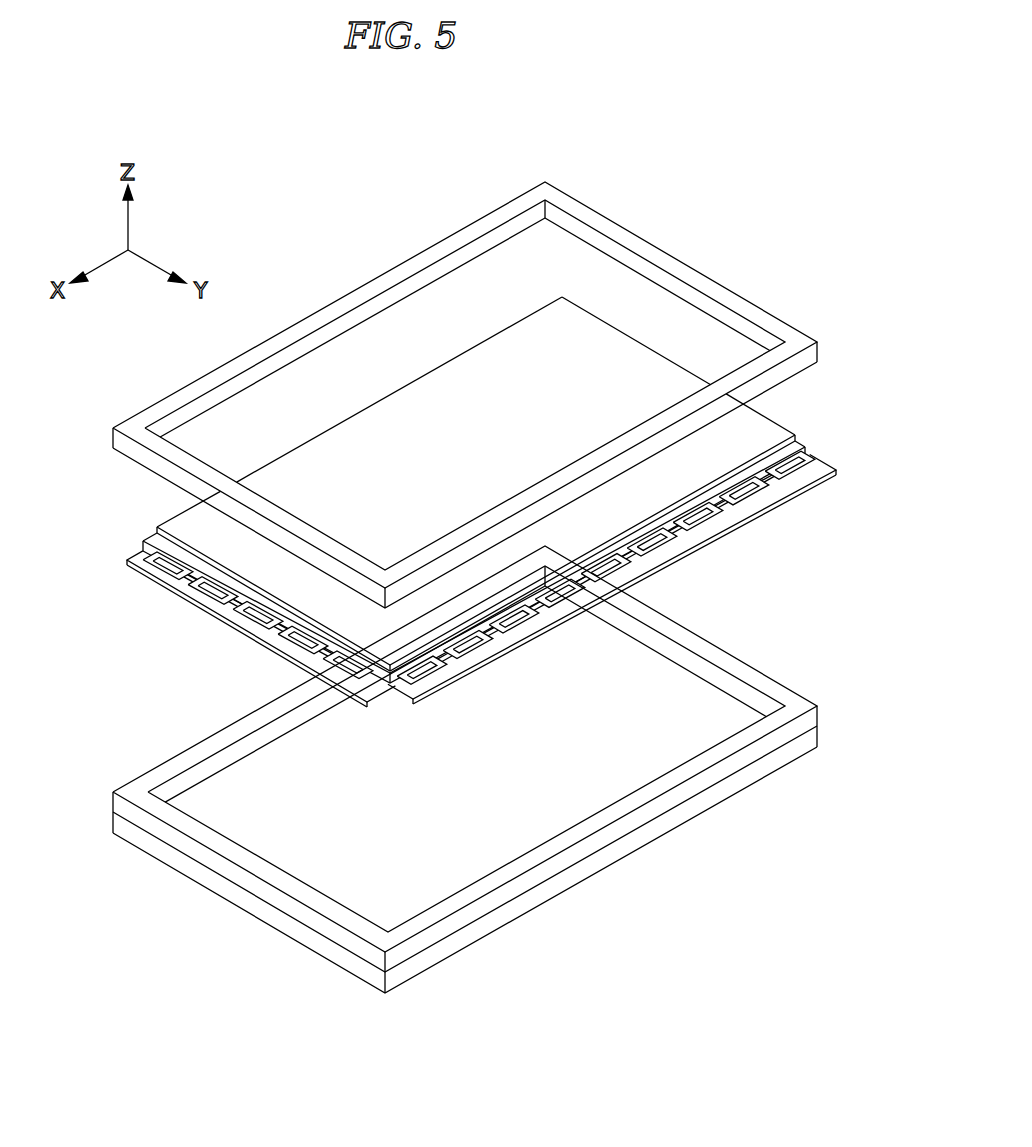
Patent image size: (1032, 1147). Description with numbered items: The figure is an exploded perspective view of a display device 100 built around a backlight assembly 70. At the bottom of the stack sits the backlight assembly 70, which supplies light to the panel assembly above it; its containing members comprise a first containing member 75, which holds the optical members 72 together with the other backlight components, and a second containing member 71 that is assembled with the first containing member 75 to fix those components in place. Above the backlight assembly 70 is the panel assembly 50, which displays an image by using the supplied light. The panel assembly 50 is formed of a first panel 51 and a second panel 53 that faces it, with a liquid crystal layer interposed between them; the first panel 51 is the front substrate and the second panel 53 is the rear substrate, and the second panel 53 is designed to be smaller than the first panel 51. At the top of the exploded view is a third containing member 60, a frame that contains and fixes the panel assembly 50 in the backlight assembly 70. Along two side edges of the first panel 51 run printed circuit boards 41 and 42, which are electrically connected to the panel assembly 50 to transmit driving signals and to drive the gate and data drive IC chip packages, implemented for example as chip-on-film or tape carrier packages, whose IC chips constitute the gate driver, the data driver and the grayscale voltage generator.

The display device 100 is at (352, 221).
The third containing member 60 is at (793, 330).
The panel assembly 50 is at (503, 490).
The second panel 53 is at (795, 436).
The first panel 51 is at (806, 448).
The printed circuit board 42 is at (637, 577).
The printed circuit board 41 is at (241, 629).
The backlight assembly 70 is at (500, 769).
The second containing member 71 is at (822, 712).
The first containing member 75 is at (822, 738).
The optical members 72 is at (684, 682).